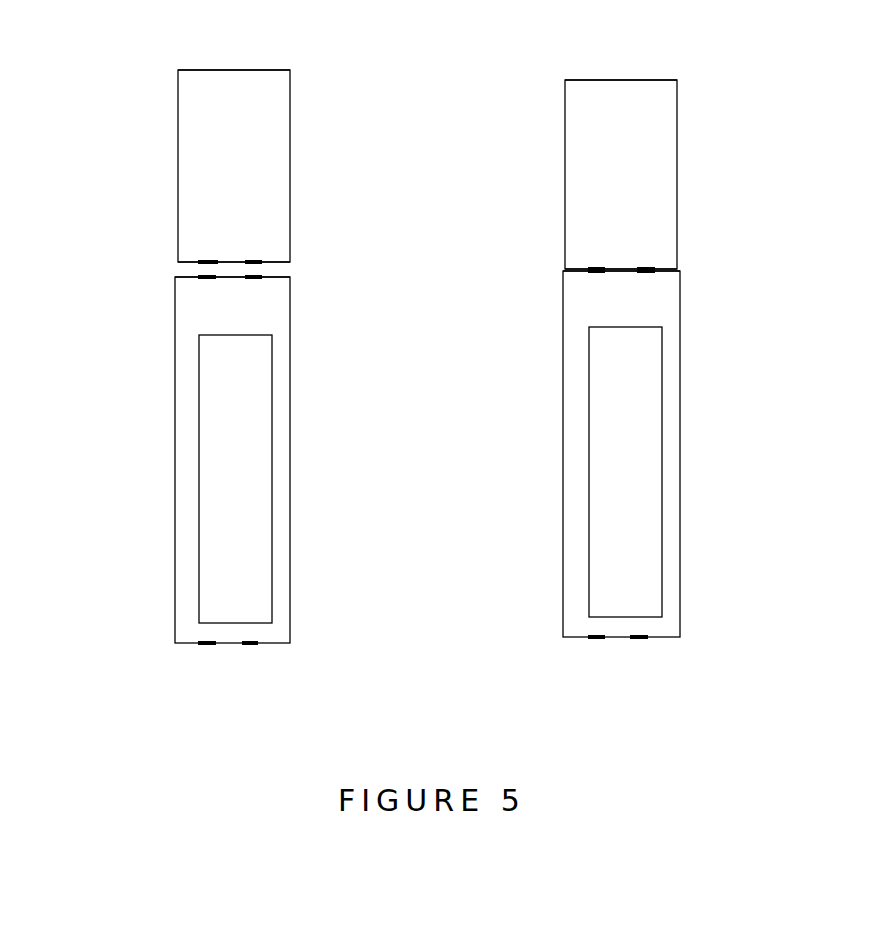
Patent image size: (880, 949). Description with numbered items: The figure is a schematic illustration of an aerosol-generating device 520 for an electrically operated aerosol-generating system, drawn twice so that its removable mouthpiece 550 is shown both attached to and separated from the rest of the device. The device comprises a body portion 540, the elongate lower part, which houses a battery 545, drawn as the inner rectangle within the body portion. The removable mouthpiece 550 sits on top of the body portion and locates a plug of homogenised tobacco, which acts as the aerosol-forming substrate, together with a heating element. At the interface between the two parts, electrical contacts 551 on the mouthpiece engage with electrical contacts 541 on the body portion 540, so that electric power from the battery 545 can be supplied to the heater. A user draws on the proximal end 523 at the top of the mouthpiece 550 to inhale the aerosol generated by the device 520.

The aerosol-generating device 520 is at (108, 300).
The proximal end 523 is at (259, 70).
The removable mouthpiece 550 is at (304, 128).
The electrical contacts on the mouthpiece 551 is at (258, 262).
The electrical contacts on the body portion 541 is at (260, 277).
The body portion 540 is at (680, 463).
The battery 545 is at (635, 552).